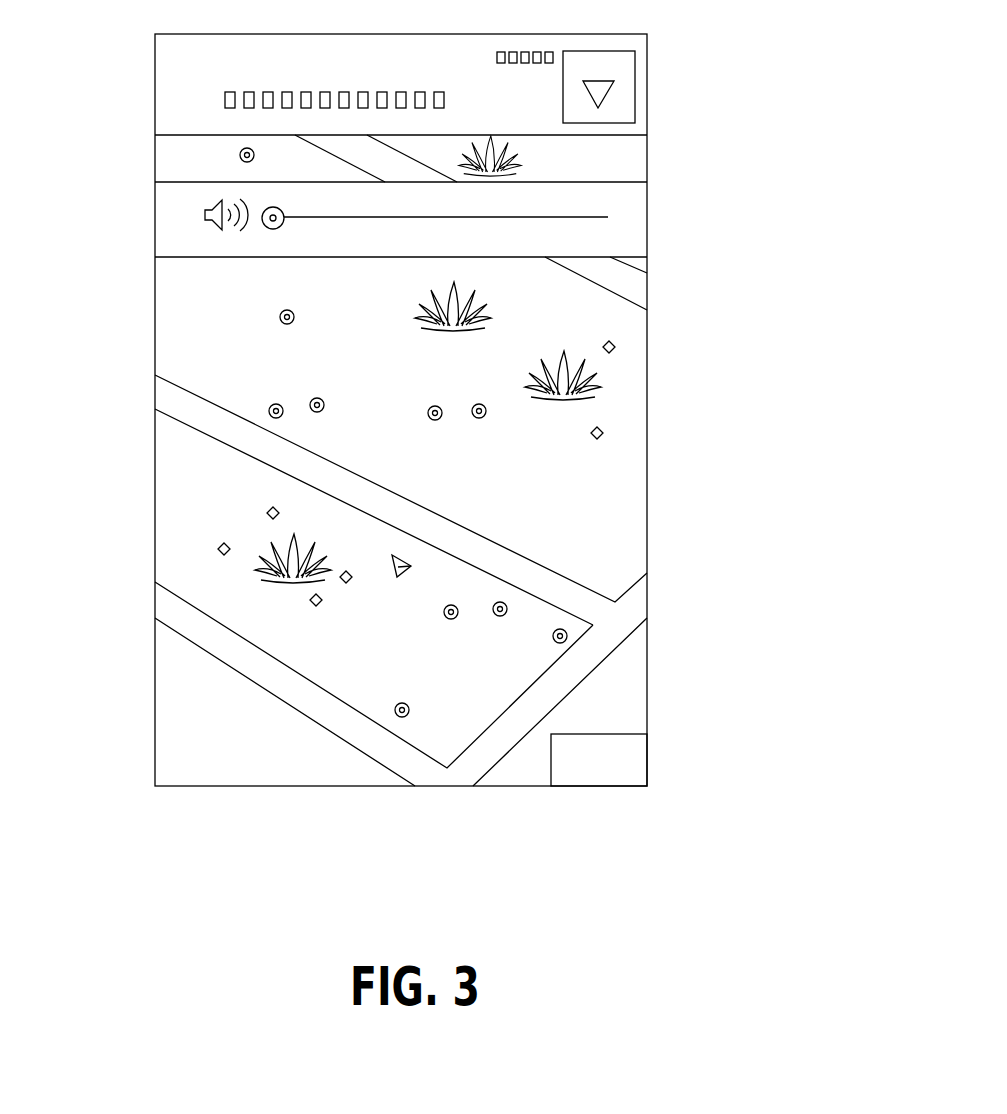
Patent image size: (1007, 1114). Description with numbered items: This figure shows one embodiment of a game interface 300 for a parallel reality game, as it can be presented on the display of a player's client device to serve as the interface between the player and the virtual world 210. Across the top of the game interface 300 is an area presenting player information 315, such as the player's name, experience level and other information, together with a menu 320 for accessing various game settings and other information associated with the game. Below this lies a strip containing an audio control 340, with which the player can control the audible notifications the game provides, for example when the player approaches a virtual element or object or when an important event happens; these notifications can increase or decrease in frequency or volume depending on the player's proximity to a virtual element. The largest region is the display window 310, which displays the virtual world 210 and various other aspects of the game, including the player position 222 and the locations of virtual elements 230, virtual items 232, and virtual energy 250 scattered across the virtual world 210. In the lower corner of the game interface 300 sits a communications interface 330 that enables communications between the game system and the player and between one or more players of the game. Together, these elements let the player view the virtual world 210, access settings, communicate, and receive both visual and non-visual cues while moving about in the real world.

The game interface 300 is at (745, 116).
The display window 310 is at (637, 164).
The player information 315 is at (165, 55).
The menu 320 is at (627, 88).
The communications interface 330 is at (638, 767).
The audio control 340 is at (165, 203).
The virtual world 210 is at (434, 521).
The player position 222 is at (398, 576).
The virtual elements 230 is at (422, 303).
The virtual items 232 is at (266, 513).
The virtual energy 250 is at (291, 317).